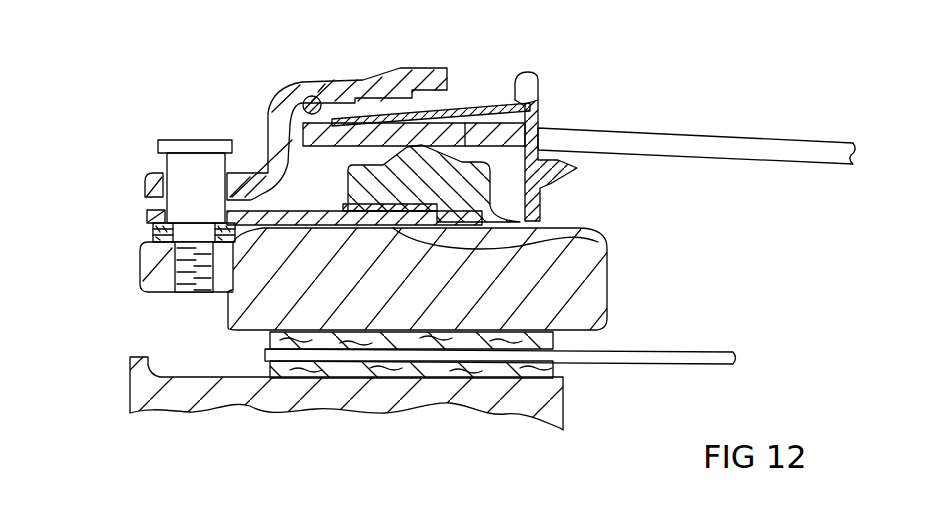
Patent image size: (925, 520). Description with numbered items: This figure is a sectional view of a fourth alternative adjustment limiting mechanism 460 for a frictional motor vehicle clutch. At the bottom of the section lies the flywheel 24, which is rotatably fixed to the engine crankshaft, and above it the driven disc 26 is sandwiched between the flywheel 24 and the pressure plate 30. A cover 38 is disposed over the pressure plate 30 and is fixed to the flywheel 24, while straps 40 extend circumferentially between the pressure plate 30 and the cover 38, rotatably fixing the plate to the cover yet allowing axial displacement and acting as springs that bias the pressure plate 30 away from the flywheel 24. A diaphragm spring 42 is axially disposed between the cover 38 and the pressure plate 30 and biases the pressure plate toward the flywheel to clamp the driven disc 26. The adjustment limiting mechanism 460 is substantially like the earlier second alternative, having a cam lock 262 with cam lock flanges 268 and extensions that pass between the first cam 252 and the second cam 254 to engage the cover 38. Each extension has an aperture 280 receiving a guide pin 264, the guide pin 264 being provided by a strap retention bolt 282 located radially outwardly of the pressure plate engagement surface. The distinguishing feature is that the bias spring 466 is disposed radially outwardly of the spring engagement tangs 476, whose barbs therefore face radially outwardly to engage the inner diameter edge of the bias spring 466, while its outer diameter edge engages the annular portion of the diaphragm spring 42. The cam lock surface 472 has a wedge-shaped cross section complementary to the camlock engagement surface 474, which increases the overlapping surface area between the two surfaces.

The strap retention bolt 282 is at (168, 140).
The guide pin 264 is at (165, 163).
The aperture 280 is at (167, 216).
The strap 40 is at (153, 231).
The cover 38 is at (268, 113).
The first cam 252 is at (345, 207).
The cam lock surface 472 is at (412, 147).
The bias spring 466 is at (443, 108).
The second cam 254 is at (460, 160).
The spring engagement tang 476 is at (517, 80).
The adjustment limiting mechanism 460 is at (685, 137).
The cam lock 262 is at (550, 165).
The diaphragm spring 42 is at (660, 156).
The camlock engagement surface 474 is at (527, 220).
The cam lock flange 268 is at (601, 244).
The pressure plate 30 is at (607, 288).
The driven disc 26 is at (713, 352).
The flywheel 24 is at (128, 393).